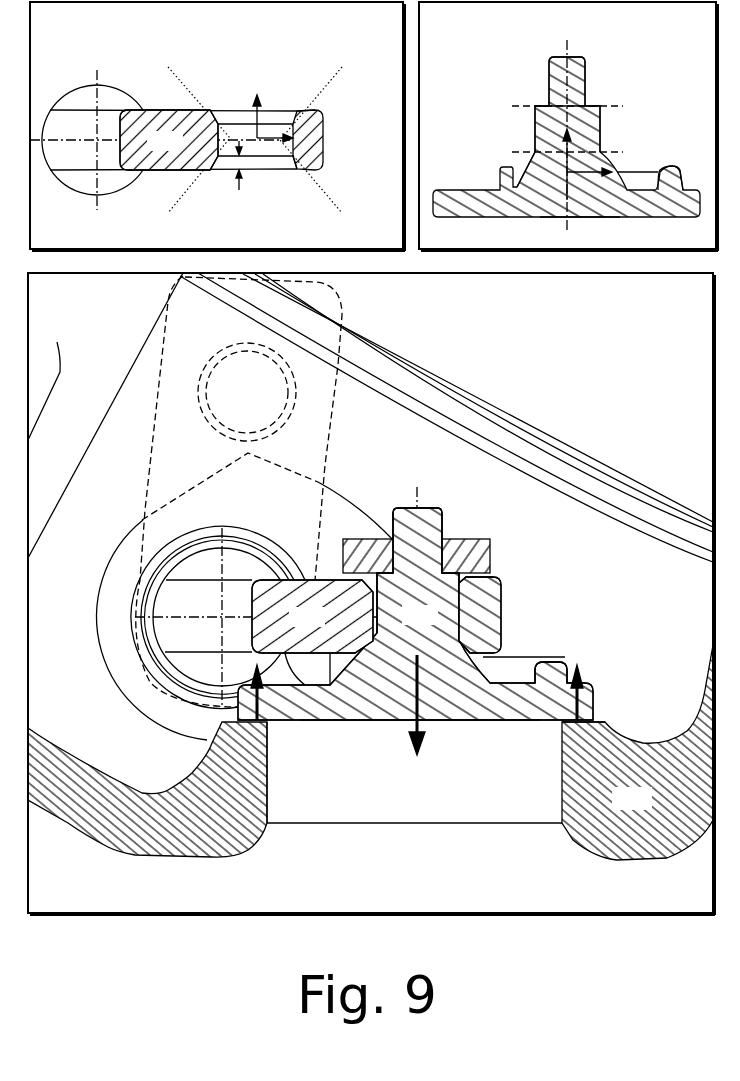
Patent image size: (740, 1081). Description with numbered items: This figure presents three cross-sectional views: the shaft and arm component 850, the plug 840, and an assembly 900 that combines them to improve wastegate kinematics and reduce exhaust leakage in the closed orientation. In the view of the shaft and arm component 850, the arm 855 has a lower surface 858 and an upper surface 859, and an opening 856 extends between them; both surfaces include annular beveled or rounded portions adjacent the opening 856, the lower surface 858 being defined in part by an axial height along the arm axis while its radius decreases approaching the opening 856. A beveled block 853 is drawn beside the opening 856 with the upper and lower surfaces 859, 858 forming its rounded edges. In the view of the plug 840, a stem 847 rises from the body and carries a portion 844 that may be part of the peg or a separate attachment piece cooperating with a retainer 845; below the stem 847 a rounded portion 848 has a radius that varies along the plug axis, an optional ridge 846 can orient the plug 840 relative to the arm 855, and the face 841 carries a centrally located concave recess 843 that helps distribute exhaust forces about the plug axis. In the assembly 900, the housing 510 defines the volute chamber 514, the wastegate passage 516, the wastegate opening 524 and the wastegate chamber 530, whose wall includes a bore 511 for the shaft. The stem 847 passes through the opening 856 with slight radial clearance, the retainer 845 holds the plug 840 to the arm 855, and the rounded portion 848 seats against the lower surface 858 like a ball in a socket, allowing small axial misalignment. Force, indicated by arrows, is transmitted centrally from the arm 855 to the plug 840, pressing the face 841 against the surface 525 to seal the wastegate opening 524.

The shaft and arm component 850 is at (81, 38).
The plug 840 is at (474, 33).
The assembly 900 is at (82, 301).
The arm 855 is at (180, 149).
The opening 856 is at (233, 123).
The load-bearing member 853 is at (322, 131).
The upper surface 859 is at (300, 112).
The lower surface 858 is at (306, 171).
The portion of the plug 844 is at (581, 58).
The stem 847 is at (535, 128).
The rounded portion 848 is at (526, 167).
The ridge 846 is at (674, 165).
The concave recess 843 is at (580, 218).
The face 841 is at (628, 216).
The retainer 845 is at (487, 540).
The bore 511 is at (142, 607).
The wastegate chamber 530 is at (630, 595).
The housing 510 is at (647, 807).
The surface 525 is at (600, 720).
The wastegate opening 524 is at (268, 743).
The wastegate passage 516 is at (267, 825).
The volute chamber 514 is at (495, 875).